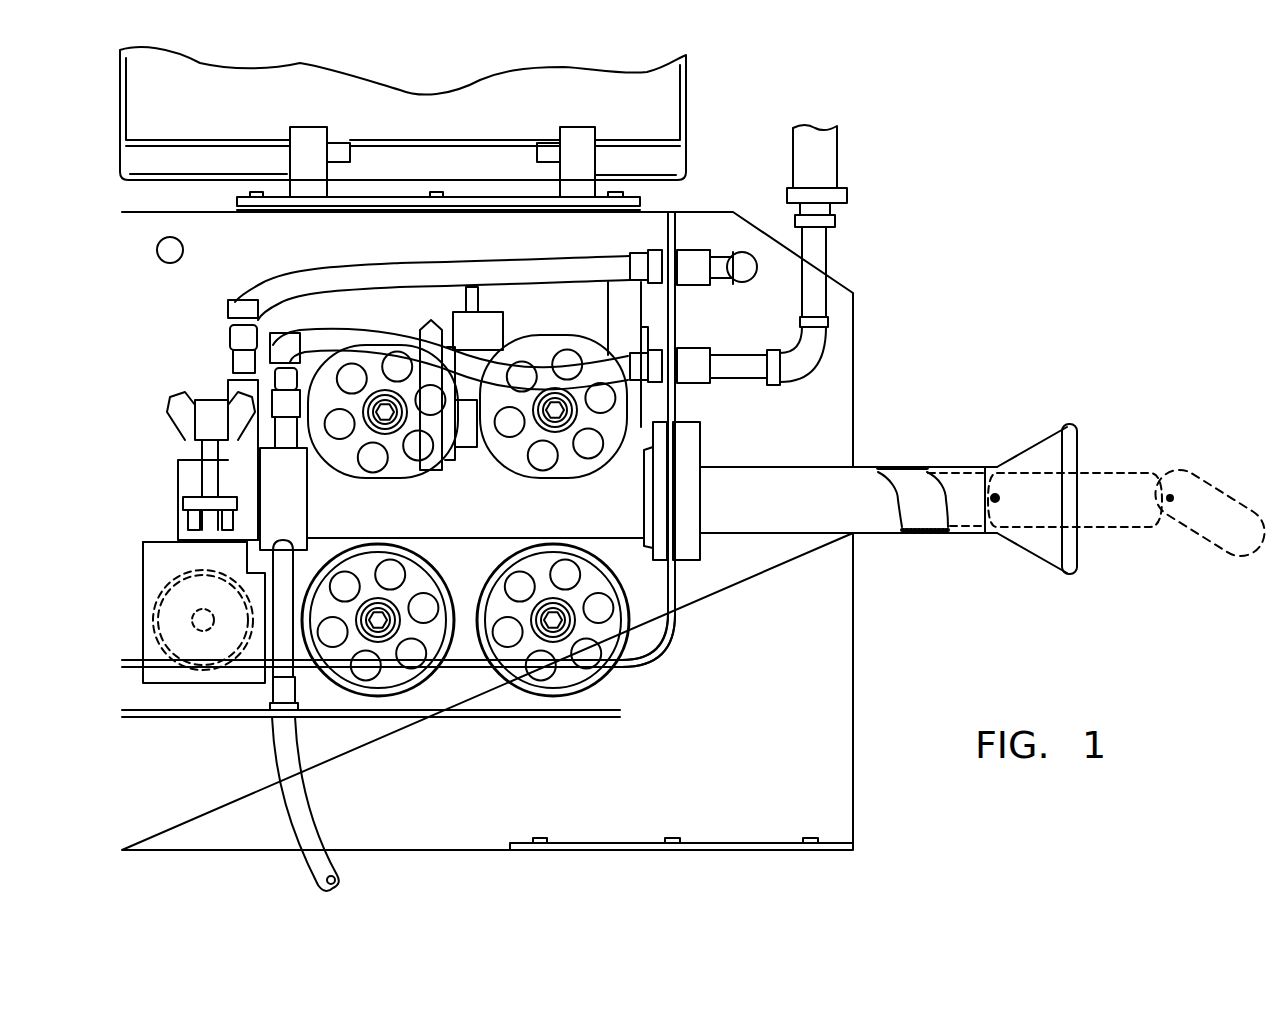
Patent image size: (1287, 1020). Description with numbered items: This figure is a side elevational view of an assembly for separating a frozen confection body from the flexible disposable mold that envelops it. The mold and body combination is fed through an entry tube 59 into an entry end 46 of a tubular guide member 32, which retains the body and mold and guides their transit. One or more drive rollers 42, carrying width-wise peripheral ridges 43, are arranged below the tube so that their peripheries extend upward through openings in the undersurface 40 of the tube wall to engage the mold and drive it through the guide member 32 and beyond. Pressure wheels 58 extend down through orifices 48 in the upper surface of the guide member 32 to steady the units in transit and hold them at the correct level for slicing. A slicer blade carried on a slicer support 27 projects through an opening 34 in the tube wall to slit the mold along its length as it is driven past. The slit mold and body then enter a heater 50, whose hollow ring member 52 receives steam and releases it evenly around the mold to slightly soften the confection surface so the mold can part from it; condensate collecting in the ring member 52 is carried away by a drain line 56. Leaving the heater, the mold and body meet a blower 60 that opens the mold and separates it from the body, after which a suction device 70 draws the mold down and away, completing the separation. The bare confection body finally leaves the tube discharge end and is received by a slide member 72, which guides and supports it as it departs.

The slicer support 27 is at (433, 330).
The guide member 32 is at (485, 514).
The opening 34 is at (408, 460).
The undersurface 40 is at (455, 540).
The drive rollers 42 is at (380, 697).
The width-wise peripheral ridges 43 is at (350, 697).
The entry end 46 is at (643, 467).
The orifices 48 is at (260, 392).
The heater 50 is at (267, 463).
The hollow ring member 52 is at (263, 500).
The drain line 56 is at (317, 865).
The pressure wheels 58 is at (372, 358).
The entry tube 59 is at (953, 467).
The blower 60 is at (237, 380).
The suction device 70 is at (152, 575).
The slide member 72 is at (157, 533).